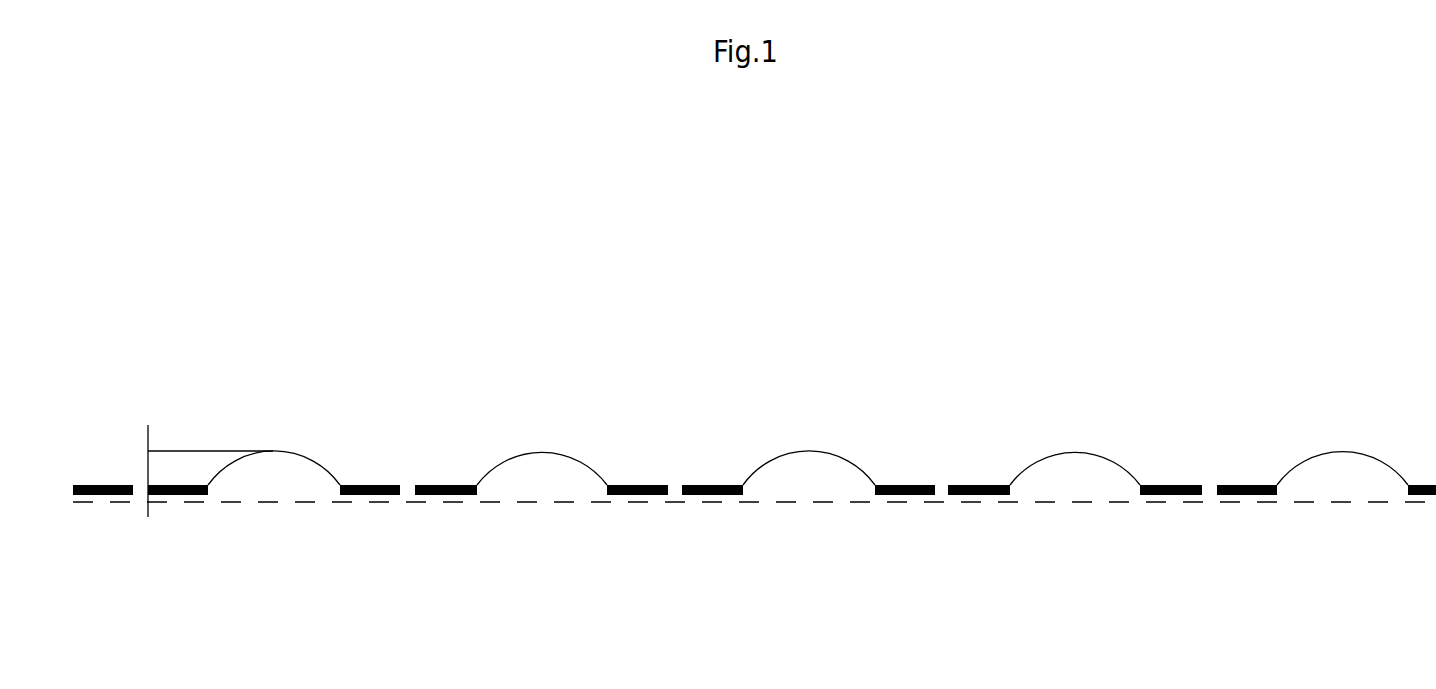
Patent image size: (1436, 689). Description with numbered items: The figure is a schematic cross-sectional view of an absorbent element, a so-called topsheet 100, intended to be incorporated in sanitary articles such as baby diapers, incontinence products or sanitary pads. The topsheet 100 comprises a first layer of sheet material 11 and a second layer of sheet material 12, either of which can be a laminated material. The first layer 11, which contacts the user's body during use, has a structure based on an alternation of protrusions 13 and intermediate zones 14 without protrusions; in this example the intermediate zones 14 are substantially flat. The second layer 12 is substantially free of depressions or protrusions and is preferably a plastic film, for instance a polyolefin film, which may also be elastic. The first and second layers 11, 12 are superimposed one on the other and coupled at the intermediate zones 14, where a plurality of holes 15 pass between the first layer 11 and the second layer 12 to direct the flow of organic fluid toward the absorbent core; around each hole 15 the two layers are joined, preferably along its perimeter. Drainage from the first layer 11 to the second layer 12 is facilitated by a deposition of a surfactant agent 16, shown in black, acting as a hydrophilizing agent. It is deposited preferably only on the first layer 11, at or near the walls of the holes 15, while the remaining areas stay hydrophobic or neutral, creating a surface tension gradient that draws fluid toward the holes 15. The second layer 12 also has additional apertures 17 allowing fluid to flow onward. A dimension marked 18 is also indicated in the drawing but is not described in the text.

The topsheet 100 is at (754, 413).
The first layer of sheet material 11 is at (781, 430).
The second layer of sheet material 12 is at (542, 521).
The protrusions 13 is at (274, 437).
The intermediate zones 14 is at (361, 447).
The holes 15 is at (426, 449).
The surfactant agent 16 is at (460, 450).
The additional apertures 17 is at (750, 541).
The bulge height 18 is at (200, 471).